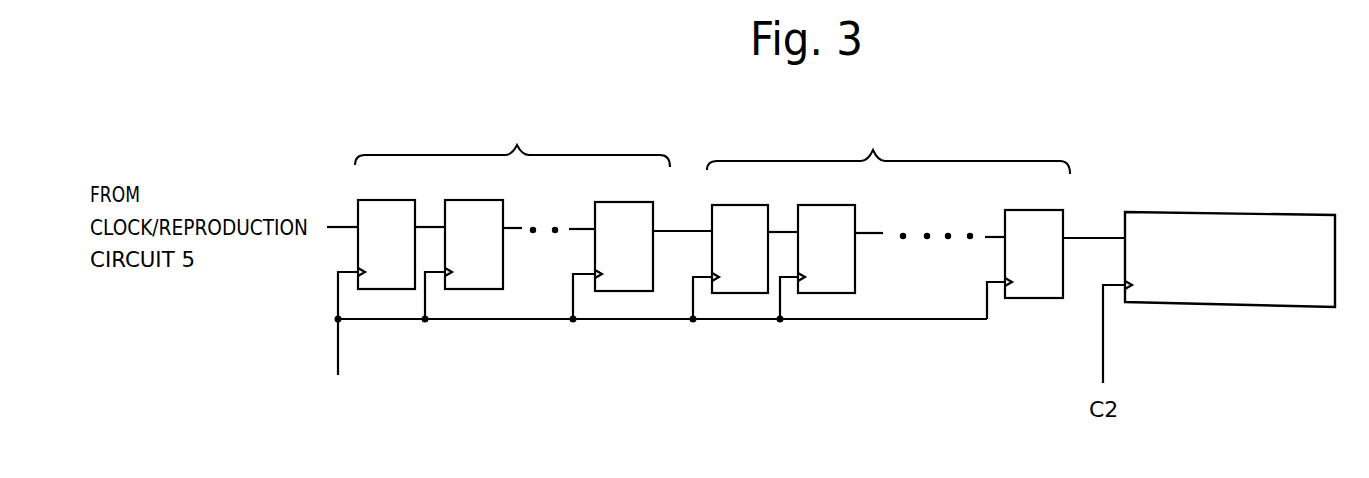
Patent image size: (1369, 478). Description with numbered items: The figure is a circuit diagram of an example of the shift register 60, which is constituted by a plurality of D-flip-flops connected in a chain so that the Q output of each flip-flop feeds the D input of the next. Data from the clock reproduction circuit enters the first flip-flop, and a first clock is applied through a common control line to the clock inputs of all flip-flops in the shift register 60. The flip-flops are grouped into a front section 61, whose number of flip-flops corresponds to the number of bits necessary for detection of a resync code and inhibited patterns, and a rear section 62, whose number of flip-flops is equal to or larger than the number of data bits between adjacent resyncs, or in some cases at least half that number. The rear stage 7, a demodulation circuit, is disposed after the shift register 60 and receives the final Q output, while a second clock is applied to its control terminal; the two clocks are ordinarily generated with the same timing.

The shift register 60 is at (728, 145).
The front section 61 is at (517, 146).
The rear section 62 is at (873, 151).
The rear stage 7 is at (1187, 212).